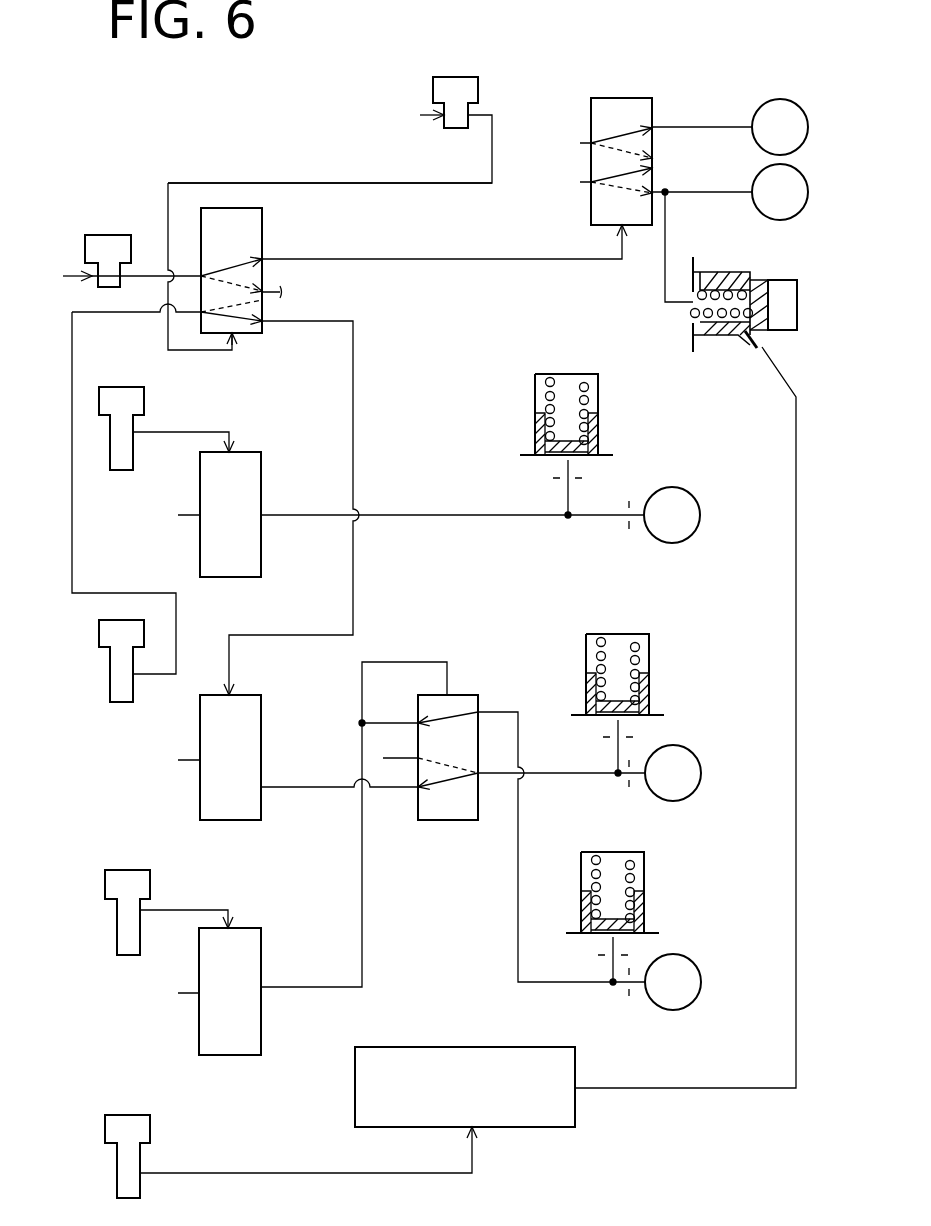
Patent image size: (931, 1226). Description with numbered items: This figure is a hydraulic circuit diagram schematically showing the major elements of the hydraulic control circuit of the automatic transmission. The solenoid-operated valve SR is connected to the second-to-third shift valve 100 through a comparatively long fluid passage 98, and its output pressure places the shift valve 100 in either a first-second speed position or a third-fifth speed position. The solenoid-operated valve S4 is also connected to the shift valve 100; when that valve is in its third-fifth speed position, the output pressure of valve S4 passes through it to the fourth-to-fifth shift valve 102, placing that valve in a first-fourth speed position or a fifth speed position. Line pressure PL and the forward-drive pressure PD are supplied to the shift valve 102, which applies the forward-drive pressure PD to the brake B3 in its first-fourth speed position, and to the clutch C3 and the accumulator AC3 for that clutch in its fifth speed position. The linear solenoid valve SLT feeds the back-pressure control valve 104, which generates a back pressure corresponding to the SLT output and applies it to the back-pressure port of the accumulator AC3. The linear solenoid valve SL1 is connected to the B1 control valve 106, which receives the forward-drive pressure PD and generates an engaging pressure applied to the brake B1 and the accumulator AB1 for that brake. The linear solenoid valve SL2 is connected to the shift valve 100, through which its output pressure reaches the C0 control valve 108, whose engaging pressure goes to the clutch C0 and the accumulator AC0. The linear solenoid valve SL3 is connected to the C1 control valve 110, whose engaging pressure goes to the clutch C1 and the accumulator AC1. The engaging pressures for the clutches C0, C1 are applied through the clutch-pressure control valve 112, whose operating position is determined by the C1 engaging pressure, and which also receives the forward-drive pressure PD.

The fluid passage 98 is at (362, 182).
The 2-3 shift valve 100 is at (248, 224).
The 4-5 shift valve 102 is at (613, 103).
The back-pressure control valve 104 is at (575, 1075).
The B1 control valve 106 is at (253, 467).
The C0 control valve 108 is at (252, 715).
The C1 control valve 110 is at (252, 955).
The clutch-pressure control valve 112 is at (427, 812).
The solenoid-operated valve S4 is at (107, 245).
The solenoid-operated valve SR is at (452, 85).
The linear solenoid valve SL1 is at (136, 395).
The linear solenoid valve SL2 is at (105, 633).
The linear solenoid valve SL3 is at (155, 882).
The linear solenoid valve SLT is at (155, 1128).
The accumulator for clutch C3 AC3 is at (800, 290).
The accumulator for brake B1 AB1 is at (598, 400).
The accumulator for clutch C0 AC0 is at (649, 652).
The accumulator for clutch C1 AC1 is at (643, 870).
The brake B3 is at (780, 127).
The clutch C3 is at (780, 192).
The brake B1 is at (672, 515).
The clutch C0 is at (673, 773).
The clutch C1 is at (673, 982).
The line pressure PL is at (563, 138).
The forward-drive pressure PD is at (361, 586).